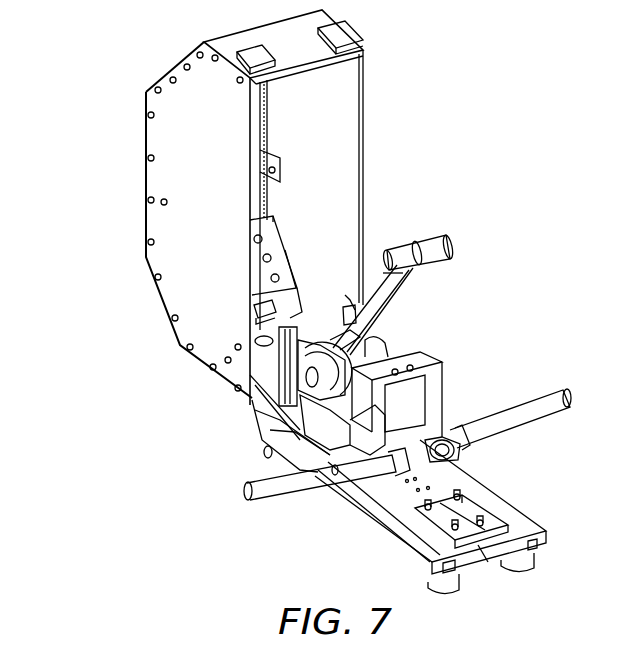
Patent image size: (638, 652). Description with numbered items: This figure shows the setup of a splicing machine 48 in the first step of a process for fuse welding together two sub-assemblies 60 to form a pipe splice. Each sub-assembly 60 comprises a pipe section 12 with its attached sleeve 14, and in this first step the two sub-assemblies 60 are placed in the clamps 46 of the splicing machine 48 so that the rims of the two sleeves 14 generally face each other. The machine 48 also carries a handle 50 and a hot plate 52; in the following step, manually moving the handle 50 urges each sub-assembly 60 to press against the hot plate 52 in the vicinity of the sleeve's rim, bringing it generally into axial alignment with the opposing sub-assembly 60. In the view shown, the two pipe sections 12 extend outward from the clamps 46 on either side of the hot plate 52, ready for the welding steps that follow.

The splicing machine 48 is at (68, 112).
The handle 50 is at (442, 233).
The hot plate 52 is at (437, 413).
The clamps 46 is at (320, 470).
The pipe section 12 is at (284, 489).
The sleeve 14 is at (388, 463).
The sub-assembly 60 is at (352, 548).